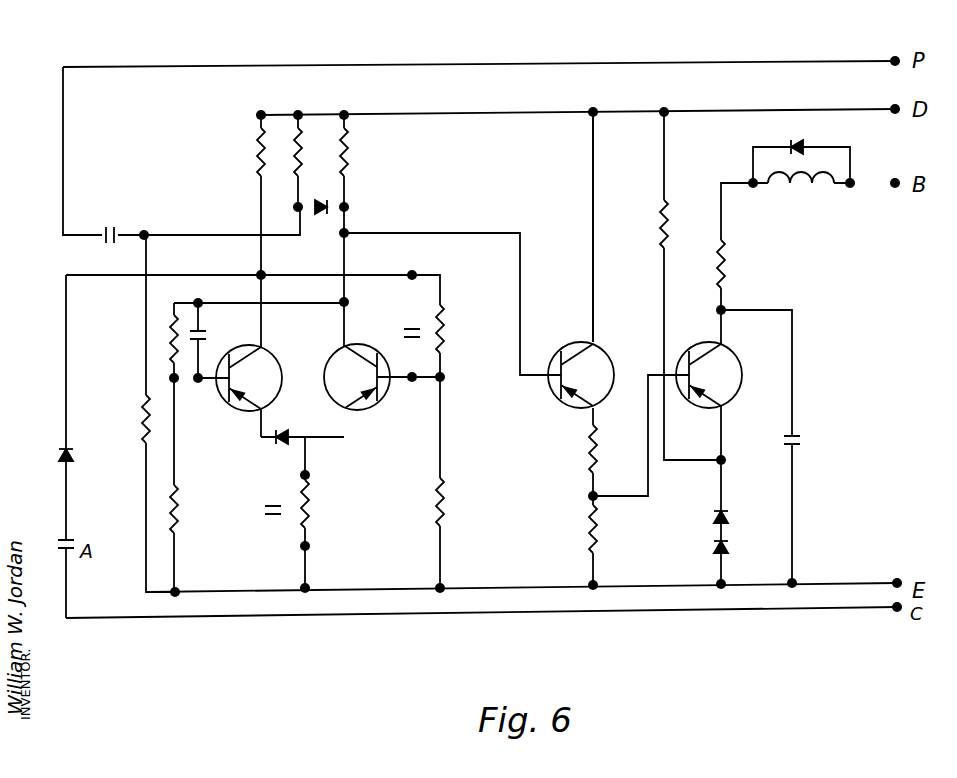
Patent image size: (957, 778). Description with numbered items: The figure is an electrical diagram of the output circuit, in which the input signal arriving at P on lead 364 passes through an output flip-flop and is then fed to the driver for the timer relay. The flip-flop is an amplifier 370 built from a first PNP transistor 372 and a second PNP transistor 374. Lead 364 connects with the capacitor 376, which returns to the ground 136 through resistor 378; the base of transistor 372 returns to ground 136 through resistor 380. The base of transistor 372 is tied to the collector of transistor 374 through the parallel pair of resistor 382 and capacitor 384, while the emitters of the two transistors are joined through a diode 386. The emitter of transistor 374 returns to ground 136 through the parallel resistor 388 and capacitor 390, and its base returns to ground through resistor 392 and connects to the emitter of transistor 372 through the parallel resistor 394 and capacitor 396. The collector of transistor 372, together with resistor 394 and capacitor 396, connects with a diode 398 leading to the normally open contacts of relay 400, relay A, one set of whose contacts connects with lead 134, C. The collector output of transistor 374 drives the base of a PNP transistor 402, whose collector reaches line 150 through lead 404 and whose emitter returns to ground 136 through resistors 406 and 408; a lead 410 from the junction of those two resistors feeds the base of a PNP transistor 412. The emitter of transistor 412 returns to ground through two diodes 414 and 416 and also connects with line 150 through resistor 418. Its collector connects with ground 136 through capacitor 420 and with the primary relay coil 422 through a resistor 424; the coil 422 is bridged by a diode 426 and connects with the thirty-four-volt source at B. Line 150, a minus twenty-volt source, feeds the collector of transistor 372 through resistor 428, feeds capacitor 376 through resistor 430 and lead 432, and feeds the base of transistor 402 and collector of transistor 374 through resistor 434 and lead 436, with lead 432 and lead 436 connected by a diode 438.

The lead 364 is at (760, 62).
The line 150 is at (797, 112).
The ground 136 is at (880, 565).
The lead 134 is at (800, 608).
The capacitor 376 is at (104, 220).
The resistor 428 is at (256, 152).
The resistor 430 is at (288, 124).
The resistor 434 is at (352, 150).
The diode 438 is at (316, 204).
The lead 436 is at (350, 218).
The lead 432 is at (242, 234).
The diode 426 is at (806, 140).
The primary relay coil 422 is at (806, 186).
The resistor 418 is at (668, 208).
The lead 404 is at (593, 228).
The resistor 424 is at (726, 256).
The resistor 382 is at (170, 328).
The capacitor 384 is at (222, 341).
The first PNP transistor 372 is at (262, 360).
The second PNP transistor 374 is at (326, 378).
The capacitor 396 is at (402, 333).
The resistor 394 is at (444, 312).
The PNP transistor 402 is at (566, 338).
The PNP transistor 412 is at (694, 338).
The resistor 378 is at (144, 402).
The diode 398 is at (94, 446).
The diode 386 is at (294, 418).
The amplifier 370 is at (332, 444).
The resistor 406 is at (587, 446).
The resistor 380 is at (178, 500).
The capacitor 390 is at (262, 512).
The resistor 388 is at (310, 512).
The resistor 392 is at (446, 488).
The lead 410 is at (604, 498).
The resistor 408 is at (588, 540).
The diode 414 is at (730, 517).
The diode 416 is at (712, 547).
The capacitor 420 is at (802, 442).
The relay 400 is at (78, 540).